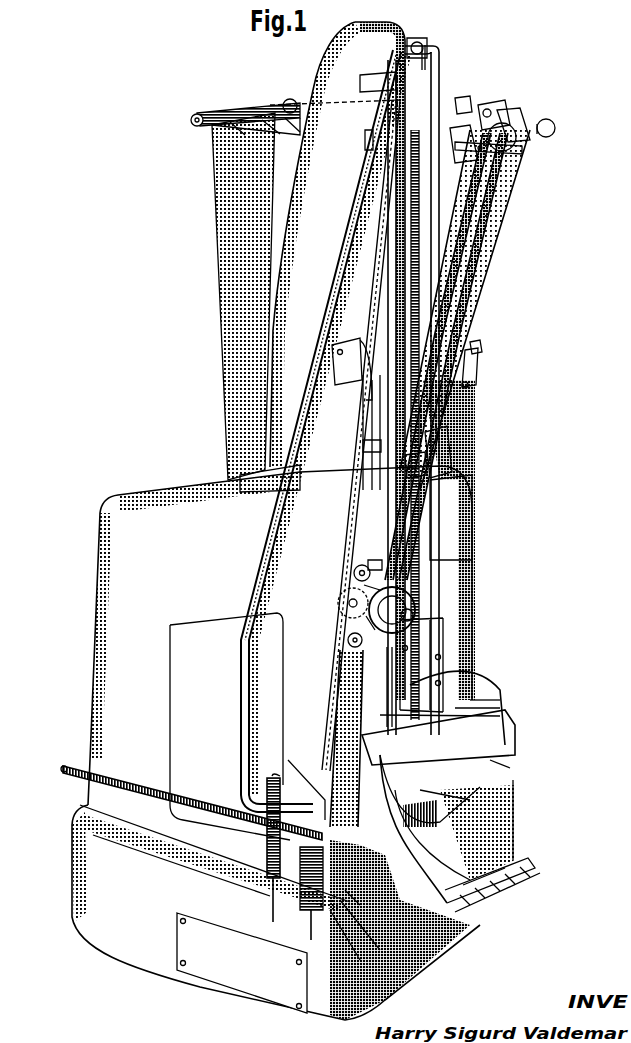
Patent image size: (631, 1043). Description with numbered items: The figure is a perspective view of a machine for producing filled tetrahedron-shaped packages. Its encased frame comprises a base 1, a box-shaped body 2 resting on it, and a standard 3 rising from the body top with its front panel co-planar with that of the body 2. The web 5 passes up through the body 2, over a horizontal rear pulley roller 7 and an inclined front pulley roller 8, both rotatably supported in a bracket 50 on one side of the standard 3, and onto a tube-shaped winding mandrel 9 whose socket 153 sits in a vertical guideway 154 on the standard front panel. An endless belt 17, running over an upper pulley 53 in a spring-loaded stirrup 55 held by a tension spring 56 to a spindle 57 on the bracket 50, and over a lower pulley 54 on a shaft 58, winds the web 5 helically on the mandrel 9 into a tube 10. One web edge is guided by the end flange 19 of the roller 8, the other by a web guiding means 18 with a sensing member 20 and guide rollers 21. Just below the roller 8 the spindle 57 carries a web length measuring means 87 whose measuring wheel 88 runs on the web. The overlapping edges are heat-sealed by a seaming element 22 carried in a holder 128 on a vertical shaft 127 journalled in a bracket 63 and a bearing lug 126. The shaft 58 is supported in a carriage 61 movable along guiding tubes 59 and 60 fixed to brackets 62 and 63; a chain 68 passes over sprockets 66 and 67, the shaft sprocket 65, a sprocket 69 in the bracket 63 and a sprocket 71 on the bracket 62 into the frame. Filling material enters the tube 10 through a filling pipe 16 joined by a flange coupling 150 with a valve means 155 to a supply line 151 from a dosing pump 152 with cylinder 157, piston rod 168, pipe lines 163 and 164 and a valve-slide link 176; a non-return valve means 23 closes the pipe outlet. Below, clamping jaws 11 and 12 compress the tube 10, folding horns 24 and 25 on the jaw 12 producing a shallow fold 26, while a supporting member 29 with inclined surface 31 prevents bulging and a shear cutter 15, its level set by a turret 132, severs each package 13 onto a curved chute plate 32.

The base 1 is at (90, 903).
The box-shaped body 2 is at (105, 580).
The standard 3 is at (343, 136).
The web 5 is at (236, 280).
The rear pulley roller 7 is at (218, 108).
The front pulley roller 8 is at (556, 128).
The winding mandrel 9 is at (430, 248).
The tube 10 is at (465, 500).
The clamping jaw 11 is at (362, 706).
The front clamping jaw 12 is at (516, 740).
The tetrahedron-shaped package 13 is at (497, 786).
The shear cutter 15 is at (478, 797).
The filling pipe 16 is at (442, 62).
The endless belt 17 is at (483, 222).
The web guiding means 18 is at (508, 376).
The end flange 19 is at (460, 100).
The web edge sensing member 20 is at (480, 345).
The guide rollers 21 is at (468, 387).
The seaming element 22 is at (450, 452).
The non-return valve means 23 is at (480, 718).
The folding horn 24 is at (483, 710).
The folding horn 25 is at (495, 702).
The fold 26 is at (462, 670).
The supporting member 29 is at (500, 764).
The inclined supporting surface 31 is at (516, 782).
The curved plate 32 is at (512, 870).
The bracket 50 is at (230, 125).
The upper pulley 53 is at (470, 152).
The lower pulley 54 is at (416, 603).
The stirrup 55 is at (500, 155).
The tension spring 56 is at (520, 140).
The spindle 57 is at (515, 128).
The shaft 58 is at (414, 614).
The guiding tube 59 is at (364, 426).
The guiding tube 60 is at (382, 465).
The carriage 61 is at (366, 562).
The bracket 62 is at (345, 768).
The bracket 63 is at (356, 375).
The sprocket 65 is at (340, 598).
The pulley sprocket 66 is at (354, 574).
The pulley sprocket 67 is at (348, 640).
The chain 68 is at (363, 446).
The pulley sprocket 69 is at (360, 395).
The pulley sprocket 71 is at (410, 960).
The web length measuring means 87 is at (497, 120).
The measuring wheel 88 is at (488, 110).
The bearing lug 126 is at (430, 663).
The vertical shaft 127 is at (432, 642).
The holder 128 is at (420, 470).
The turret 132 is at (442, 935).
The flange coupling 150 is at (440, 50).
The supply line 151 is at (378, 200).
The pump 152 is at (190, 682).
The socket 153 is at (372, 192).
The vertical guideway 154 is at (400, 143).
The valve means 155 is at (420, 42).
The pump cylinder 157 is at (398, 980).
The pipe line 163 is at (262, 822).
The pipe line 164 is at (85, 766).
The piston rod 168 is at (312, 945).
The link 176 is at (270, 955).